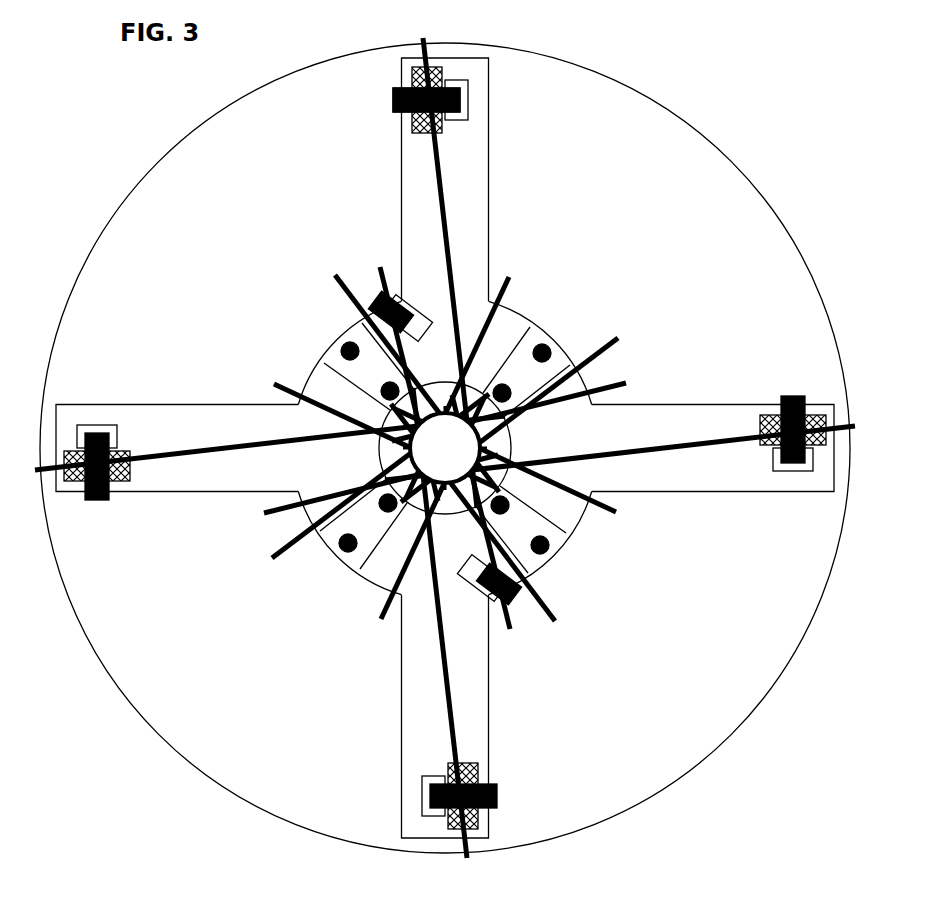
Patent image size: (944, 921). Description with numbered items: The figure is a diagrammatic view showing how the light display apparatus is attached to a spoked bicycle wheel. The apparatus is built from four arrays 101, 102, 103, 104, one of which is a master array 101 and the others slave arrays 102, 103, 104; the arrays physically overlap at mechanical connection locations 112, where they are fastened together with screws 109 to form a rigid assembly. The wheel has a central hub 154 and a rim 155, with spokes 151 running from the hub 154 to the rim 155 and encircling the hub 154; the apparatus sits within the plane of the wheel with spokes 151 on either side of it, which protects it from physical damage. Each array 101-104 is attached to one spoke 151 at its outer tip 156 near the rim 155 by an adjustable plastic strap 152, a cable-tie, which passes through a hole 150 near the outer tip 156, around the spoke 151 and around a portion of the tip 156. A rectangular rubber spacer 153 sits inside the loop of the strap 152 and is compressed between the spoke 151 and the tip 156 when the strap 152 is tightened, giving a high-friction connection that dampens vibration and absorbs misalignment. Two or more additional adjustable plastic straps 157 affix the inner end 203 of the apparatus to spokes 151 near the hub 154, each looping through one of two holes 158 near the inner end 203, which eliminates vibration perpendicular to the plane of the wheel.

The master array 101 is at (490, 191).
The slave array 102 is at (690, 406).
The slave array 103 is at (487, 708).
The slave array 104 is at (173, 493).
The screws 109 is at (338, 352).
The mechanical connection locations 112 is at (360, 325).
The hole 150 is at (467, 92).
The spokes 151 is at (452, 268).
The adjustable plastic strap 152 is at (392, 98).
The rectangular rubber spacer 153 is at (410, 133).
The central hub 154 is at (398, 598).
The rim 155 is at (671, 785).
The outer tips 156 is at (470, 115).
The adjustable plastic straps 157 is at (515, 597).
The holes 158 is at (480, 602).
The inner end 203 is at (517, 312).